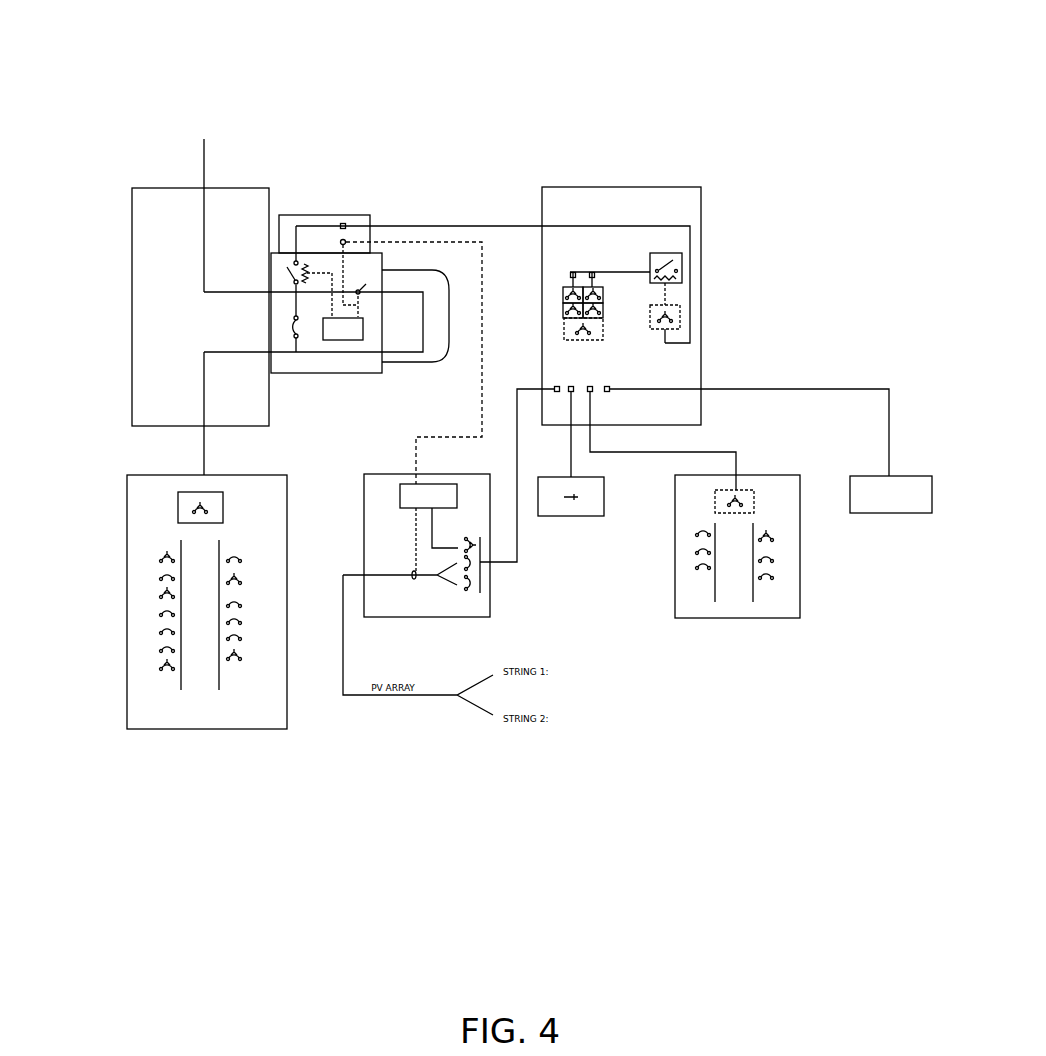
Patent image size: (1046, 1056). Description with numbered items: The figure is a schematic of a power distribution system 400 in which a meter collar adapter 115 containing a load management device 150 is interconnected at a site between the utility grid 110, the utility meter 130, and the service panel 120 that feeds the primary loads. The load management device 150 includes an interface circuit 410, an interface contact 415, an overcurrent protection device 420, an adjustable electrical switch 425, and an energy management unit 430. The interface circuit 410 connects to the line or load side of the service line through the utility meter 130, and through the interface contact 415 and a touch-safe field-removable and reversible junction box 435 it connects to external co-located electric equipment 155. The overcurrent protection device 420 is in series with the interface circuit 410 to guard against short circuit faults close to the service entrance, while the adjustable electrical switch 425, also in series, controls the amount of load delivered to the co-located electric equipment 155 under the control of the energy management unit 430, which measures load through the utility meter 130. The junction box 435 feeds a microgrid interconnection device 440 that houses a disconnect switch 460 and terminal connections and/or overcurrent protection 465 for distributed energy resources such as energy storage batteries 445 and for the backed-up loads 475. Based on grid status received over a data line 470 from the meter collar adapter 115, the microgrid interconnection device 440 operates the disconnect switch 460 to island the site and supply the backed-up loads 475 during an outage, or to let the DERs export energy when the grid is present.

The utility grid 110 is at (222, 153).
The meter collar adapter 115 is at (307, 384).
The service panel 120 is at (288, 698).
The utility meter 130 is at (410, 270).
The load management device 150 is at (357, 267).
The co-located electric equipment 155 is at (653, 384).
The power distribution system 400 is at (520, 130).
The interface circuit 410 is at (280, 277).
The interface contact 415 is at (283, 258).
The overcurrent protection device 420 is at (272, 321).
The adjustable electrical switch 425 is at (282, 268).
The energy management unit 430 is at (343, 341).
The touch-safe field-removable and reversible junction box 435 is at (305, 212).
The microgrid interconnection device 440 is at (672, 291).
The energy storage batteries 445 is at (597, 524).
The disconnect switch 460 is at (682, 245).
The terminal connections and/or overcurrent protection 465 is at (680, 318).
The data line 470 is at (487, 312).
The backed-up loads 475 is at (800, 627).